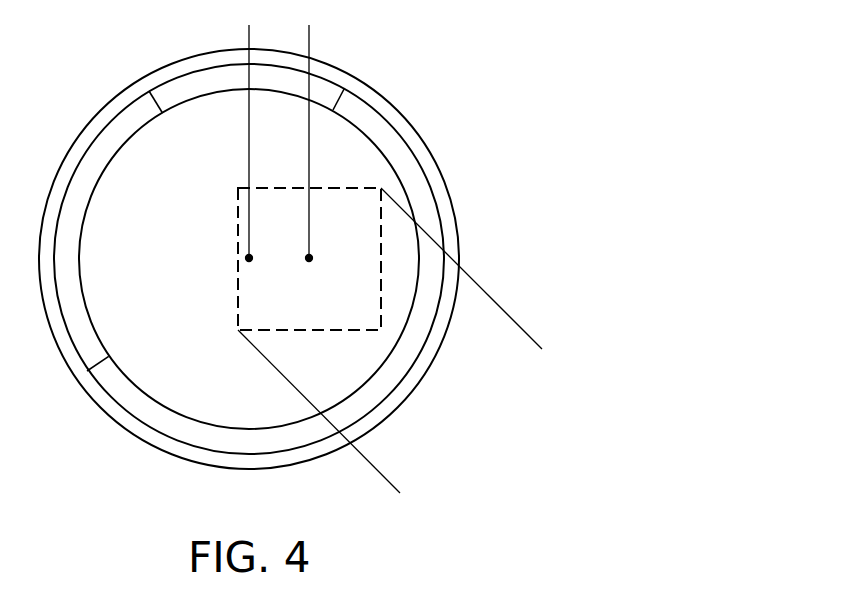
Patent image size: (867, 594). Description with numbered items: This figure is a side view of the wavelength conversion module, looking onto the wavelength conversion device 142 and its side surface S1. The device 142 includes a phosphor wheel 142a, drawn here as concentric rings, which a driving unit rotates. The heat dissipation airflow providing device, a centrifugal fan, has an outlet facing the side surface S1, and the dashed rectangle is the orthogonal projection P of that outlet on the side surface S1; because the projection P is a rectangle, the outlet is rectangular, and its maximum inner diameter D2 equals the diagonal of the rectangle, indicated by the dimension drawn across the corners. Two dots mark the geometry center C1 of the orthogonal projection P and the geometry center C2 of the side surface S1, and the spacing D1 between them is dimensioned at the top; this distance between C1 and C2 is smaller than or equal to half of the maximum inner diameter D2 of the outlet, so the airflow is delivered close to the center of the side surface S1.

The wavelength conversion device 142 is at (386, 77).
The phosphor wheel 142a is at (352, 152).
The orthogonal projection P is at (355, 188).
The side surface S1 is at (112, 222).
The geometry center of the orthogonal projection C1 is at (309, 258).
The geometry center of the side surface C2 is at (249, 258).
The distance between centers D1 is at (309, 33).
The maximum inner diameter of the outlet D2 is at (530, 336).